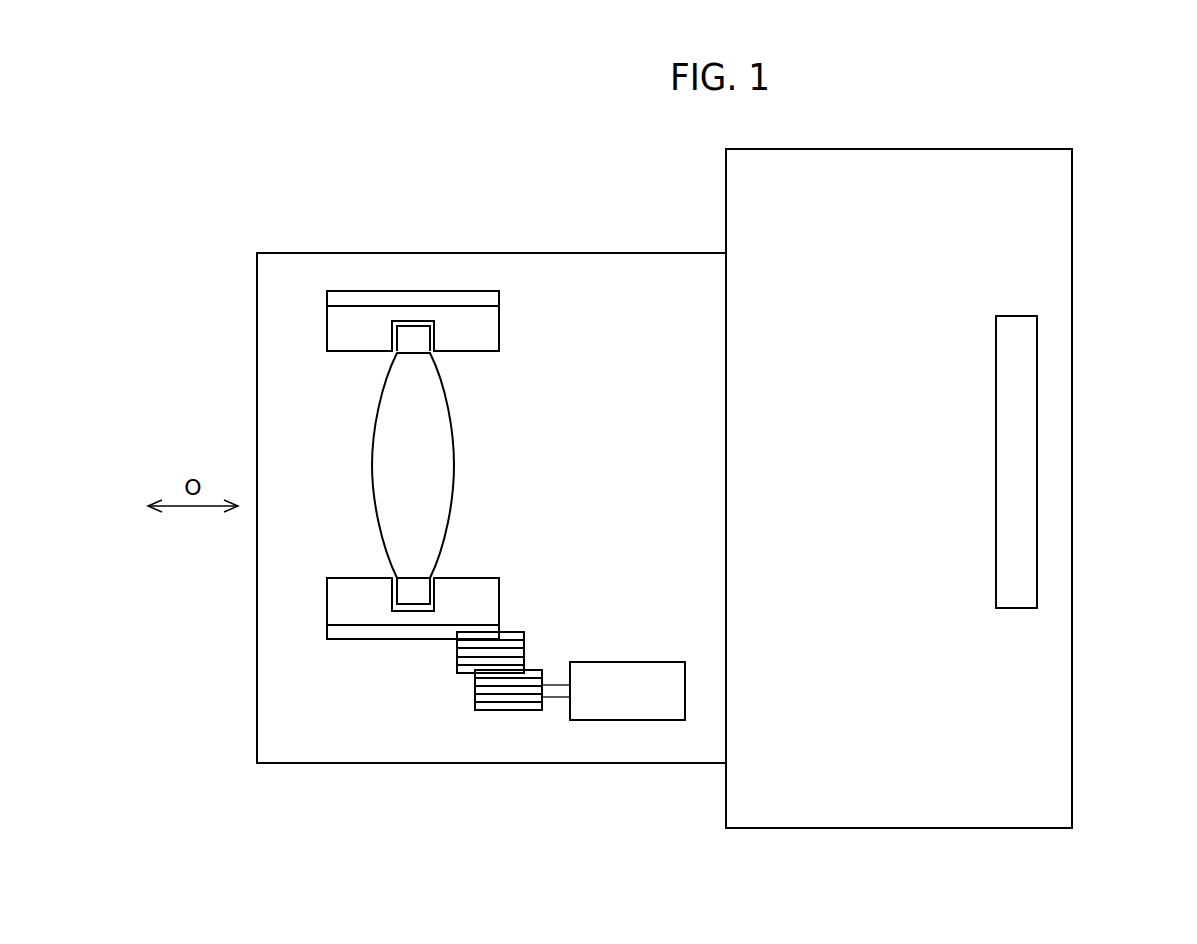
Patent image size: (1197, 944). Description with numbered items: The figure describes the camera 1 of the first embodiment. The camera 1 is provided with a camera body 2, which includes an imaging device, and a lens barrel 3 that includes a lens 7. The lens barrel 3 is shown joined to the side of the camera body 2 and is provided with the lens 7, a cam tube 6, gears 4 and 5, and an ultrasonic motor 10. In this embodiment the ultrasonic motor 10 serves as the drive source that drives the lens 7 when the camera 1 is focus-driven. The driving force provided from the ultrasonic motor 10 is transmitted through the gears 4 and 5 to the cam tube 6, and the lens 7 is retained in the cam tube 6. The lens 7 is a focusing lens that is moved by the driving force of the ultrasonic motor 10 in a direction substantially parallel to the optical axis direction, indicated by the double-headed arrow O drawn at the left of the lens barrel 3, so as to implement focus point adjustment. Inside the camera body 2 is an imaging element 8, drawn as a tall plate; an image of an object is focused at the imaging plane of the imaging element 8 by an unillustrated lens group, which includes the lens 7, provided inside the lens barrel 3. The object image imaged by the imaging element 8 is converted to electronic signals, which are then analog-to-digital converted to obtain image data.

The camera 1 is at (1122, 168).
The camera body 2 is at (930, 812).
The lens barrel 3 is at (638, 272).
The gear 4 is at (519, 698).
The gear 5 is at (466, 666).
The cam tube 6 is at (356, 624).
The lens 7 is at (443, 466).
The imaging element 8 is at (1004, 444).
The ultrasonic motor 10 is at (620, 678).